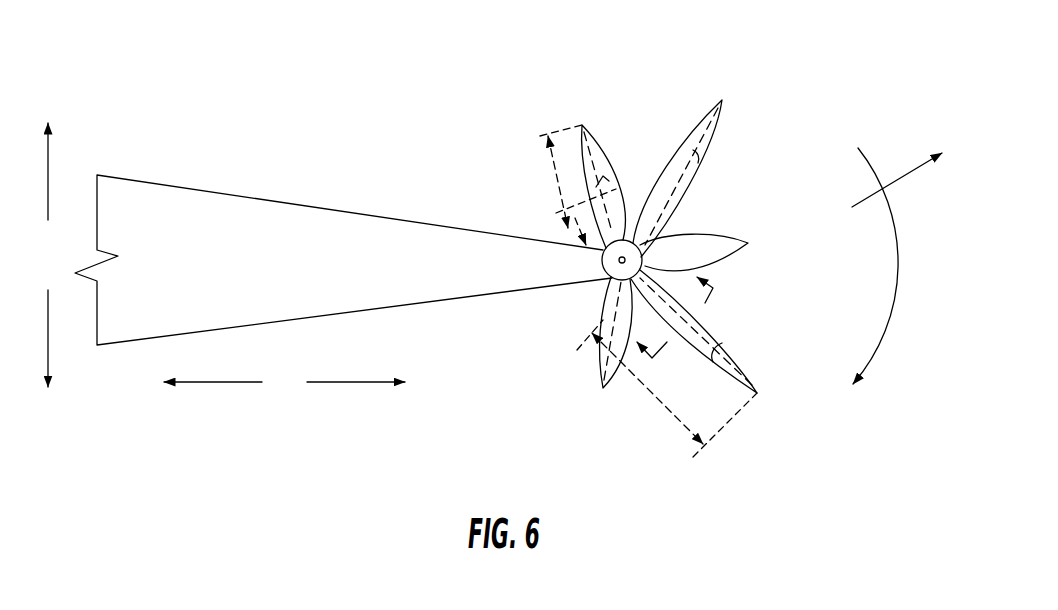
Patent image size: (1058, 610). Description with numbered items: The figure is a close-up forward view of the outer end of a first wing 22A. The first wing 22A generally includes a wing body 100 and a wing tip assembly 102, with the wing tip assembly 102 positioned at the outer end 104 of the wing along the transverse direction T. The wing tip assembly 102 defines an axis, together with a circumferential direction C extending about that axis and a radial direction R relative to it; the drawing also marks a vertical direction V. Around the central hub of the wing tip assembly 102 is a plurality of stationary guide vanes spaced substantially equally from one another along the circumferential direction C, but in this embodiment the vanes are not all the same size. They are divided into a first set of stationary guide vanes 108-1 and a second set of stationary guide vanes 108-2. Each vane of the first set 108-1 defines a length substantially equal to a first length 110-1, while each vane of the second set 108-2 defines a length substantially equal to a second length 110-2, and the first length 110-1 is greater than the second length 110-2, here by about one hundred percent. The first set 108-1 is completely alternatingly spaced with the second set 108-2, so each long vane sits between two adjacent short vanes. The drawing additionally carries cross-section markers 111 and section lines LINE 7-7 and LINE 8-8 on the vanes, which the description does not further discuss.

The first wing 22A is at (378, 144).
The wing body 100 is at (278, 226).
The wing tip assembly 102 is at (673, 99).
The outer end 104 is at (522, 374).
The first set of stationary guide vanes 108-1 is at (725, 116).
The second set of stationary guide vanes 108-2 is at (584, 124).
The first length 110-1 is at (678, 414).
The second length 110-2 is at (545, 141).
The blade cross-section location 111 is at (607, 153).
The vertical direction V is at (48, 255).
The transverse direction T is at (284, 381).
The radial direction R is at (906, 175).
The circumferential direction C is at (897, 297).
The section line 8-8 LINE 8-8 is at (560, 211).
The section line 7-7 LINE 7-7 is at (712, 290).